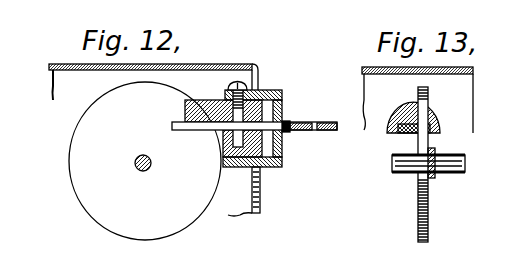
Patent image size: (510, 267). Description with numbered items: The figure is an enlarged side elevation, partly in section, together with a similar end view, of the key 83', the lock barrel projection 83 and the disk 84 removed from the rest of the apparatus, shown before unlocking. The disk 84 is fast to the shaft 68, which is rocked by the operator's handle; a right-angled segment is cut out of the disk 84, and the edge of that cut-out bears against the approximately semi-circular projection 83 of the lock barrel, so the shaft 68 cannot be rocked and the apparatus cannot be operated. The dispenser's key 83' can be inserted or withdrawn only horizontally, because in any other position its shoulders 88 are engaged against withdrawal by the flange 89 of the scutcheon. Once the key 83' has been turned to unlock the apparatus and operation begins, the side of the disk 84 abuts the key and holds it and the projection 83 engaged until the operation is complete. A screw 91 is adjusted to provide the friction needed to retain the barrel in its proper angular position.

In FIG. 12, the shaft 68 is at (140, 170).
In FIG. 13, the shaft 68 is at (456, 155).
In FIG. 12, the lock barrel projection 83 is at (223, 95).
In FIG. 13, the lock barrel projection 83 is at (424, 115).
In FIG. 12, the dispenser's key 83' is at (313, 113).
In FIG. 13, the dispenser's key 83' is at (390, 144).
In FIG. 12, the disk 84 is at (68, 155).
In FIG. 13, the disk 84 is at (430, 218).
In FIG. 12, the shoulders 88 is at (287, 120).
In FIG. 12, the flange 89 is at (282, 120).
In FIG. 12, the screw 91 is at (257, 78).